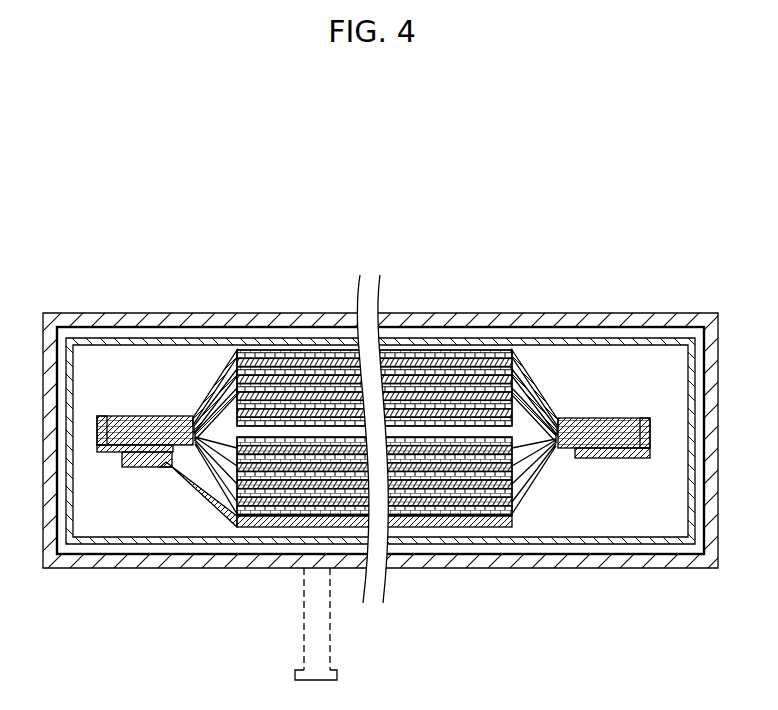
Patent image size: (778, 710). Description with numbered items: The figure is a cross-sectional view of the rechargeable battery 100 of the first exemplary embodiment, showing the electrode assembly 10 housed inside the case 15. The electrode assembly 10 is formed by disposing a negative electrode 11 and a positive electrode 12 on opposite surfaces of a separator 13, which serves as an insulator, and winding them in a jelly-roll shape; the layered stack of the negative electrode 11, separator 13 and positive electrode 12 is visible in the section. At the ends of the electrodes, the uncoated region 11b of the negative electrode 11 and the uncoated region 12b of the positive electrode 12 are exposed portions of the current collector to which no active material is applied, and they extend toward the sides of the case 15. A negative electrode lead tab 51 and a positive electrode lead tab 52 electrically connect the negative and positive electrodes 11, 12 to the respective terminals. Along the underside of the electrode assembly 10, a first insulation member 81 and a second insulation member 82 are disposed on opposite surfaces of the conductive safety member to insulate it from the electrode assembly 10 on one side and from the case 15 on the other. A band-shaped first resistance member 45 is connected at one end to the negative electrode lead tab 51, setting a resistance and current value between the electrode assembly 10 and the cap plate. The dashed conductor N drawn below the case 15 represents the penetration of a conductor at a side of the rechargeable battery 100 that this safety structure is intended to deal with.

The rechargeable battery 100 is at (359, 172).
The electrode assembly 10 is at (375, 441).
The negative electrode 11 is at (247, 352).
The positive electrode 12 is at (325, 382).
The separator 13 is at (287, 366).
The uncoated region 11b is at (140, 416).
The uncoated region 12b is at (605, 418).
The case 15 is at (190, 568).
The first resistance member 45 is at (417, 527).
The negative electrode lead tab 51 is at (105, 452).
The positive electrode lead tab 52 is at (622, 458).
The first insulation member 81 is at (484, 517).
The second insulation member 82 is at (575, 556).
The conductor N is at (332, 648).